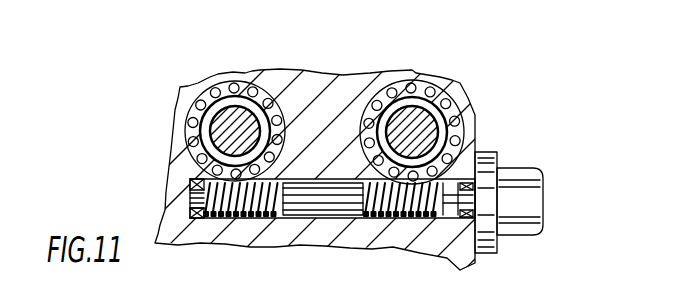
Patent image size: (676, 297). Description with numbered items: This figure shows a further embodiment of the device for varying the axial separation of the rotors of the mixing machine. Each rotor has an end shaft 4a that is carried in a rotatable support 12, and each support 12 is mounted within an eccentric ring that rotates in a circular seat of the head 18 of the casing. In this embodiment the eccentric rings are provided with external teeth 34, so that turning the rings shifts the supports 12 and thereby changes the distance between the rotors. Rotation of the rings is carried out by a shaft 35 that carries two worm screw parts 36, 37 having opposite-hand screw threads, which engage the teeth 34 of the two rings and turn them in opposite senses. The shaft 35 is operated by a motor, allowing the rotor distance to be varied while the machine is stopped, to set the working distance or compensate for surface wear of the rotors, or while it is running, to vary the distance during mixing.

The rotatable support 12 is at (178, 143).
The head 18 is at (182, 86).
The external teeth 34 is at (276, 74).
The shaft 4a is at (190, 165).
The shaft 35 is at (323, 210).
The worm screw part 36 is at (219, 222).
The worm screw part 37 is at (408, 222).